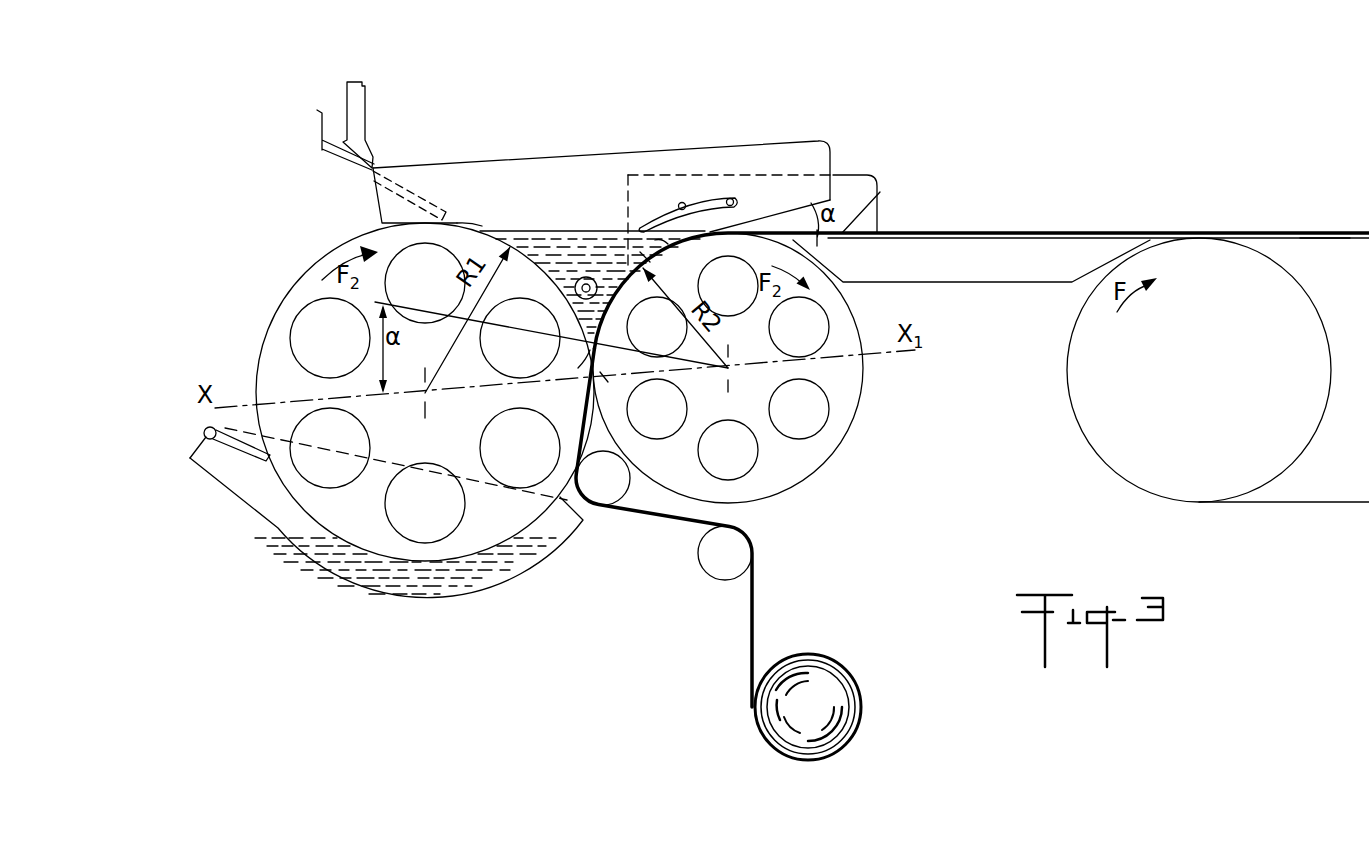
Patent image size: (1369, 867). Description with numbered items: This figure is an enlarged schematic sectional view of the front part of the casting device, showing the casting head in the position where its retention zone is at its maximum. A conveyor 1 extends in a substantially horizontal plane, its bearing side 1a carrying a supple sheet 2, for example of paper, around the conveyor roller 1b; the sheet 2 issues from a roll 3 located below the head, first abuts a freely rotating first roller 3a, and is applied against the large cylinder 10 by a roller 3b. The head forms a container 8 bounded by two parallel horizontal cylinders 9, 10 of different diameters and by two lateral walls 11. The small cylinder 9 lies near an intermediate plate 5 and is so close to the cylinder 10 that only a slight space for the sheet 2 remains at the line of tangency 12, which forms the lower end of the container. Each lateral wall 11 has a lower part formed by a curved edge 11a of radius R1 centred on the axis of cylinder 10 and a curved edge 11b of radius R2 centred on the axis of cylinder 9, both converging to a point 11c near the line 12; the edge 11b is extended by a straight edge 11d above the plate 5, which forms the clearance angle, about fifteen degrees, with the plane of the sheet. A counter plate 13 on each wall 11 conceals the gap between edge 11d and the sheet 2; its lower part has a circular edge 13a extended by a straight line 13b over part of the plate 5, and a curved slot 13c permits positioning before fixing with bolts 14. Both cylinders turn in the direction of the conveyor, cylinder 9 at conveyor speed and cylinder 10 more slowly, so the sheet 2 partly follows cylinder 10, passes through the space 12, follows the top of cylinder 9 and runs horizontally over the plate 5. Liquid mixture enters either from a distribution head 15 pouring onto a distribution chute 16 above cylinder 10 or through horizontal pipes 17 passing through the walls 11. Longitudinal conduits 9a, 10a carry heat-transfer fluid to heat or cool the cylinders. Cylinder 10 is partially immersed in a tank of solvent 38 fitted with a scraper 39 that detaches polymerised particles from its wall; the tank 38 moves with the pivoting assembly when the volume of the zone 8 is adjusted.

The conveyor 1 is at (1260, 510).
The bearing side 1a is at (1323, 241).
The belt roller 1b is at (1308, 444).
The supple sheet 2 is at (590, 437).
The roller 3 is at (862, 706).
The first roller 3a is at (718, 565).
The roller 3b is at (610, 492).
The intermediate plate 5 is at (1022, 283).
The container 8 is at (548, 247).
The cylinder 9 is at (805, 460).
The conduits 9a is at (858, 402).
The cylinder 10 is at (263, 350).
The conduits 10a is at (423, 468).
The lateral walls 11 is at (604, 148).
The curved edge 11a is at (457, 225).
The curved edge 11b is at (647, 258).
The point 11c is at (578, 368).
The straight edge 11d is at (758, 226).
The line of tangency 12 is at (605, 377).
The counter plate 13 is at (856, 186).
The circular edge 13a is at (668, 244).
The straight line 13b is at (880, 192).
The curved slot 13c is at (663, 212).
The bolts 14 is at (684, 205).
The distribution head 15 is at (353, 97).
The distribution chute 16 is at (322, 150).
The horizontal pipes 17 is at (592, 277).
The tank of solvent 38 is at (380, 578).
The scraper 39 is at (248, 460).